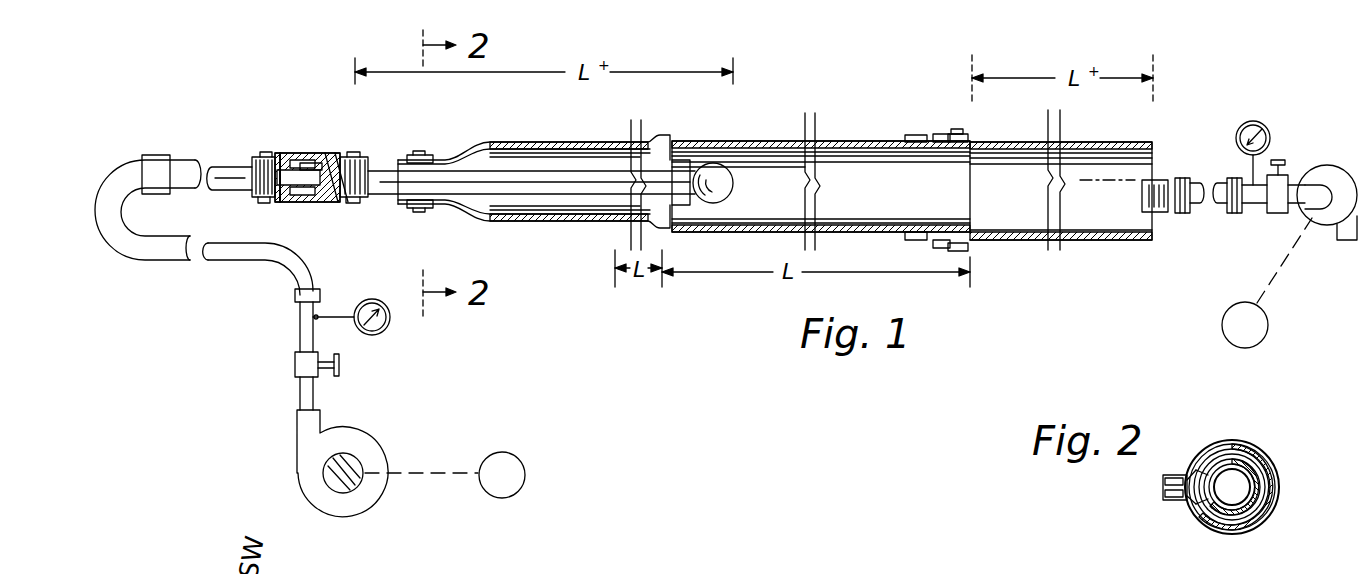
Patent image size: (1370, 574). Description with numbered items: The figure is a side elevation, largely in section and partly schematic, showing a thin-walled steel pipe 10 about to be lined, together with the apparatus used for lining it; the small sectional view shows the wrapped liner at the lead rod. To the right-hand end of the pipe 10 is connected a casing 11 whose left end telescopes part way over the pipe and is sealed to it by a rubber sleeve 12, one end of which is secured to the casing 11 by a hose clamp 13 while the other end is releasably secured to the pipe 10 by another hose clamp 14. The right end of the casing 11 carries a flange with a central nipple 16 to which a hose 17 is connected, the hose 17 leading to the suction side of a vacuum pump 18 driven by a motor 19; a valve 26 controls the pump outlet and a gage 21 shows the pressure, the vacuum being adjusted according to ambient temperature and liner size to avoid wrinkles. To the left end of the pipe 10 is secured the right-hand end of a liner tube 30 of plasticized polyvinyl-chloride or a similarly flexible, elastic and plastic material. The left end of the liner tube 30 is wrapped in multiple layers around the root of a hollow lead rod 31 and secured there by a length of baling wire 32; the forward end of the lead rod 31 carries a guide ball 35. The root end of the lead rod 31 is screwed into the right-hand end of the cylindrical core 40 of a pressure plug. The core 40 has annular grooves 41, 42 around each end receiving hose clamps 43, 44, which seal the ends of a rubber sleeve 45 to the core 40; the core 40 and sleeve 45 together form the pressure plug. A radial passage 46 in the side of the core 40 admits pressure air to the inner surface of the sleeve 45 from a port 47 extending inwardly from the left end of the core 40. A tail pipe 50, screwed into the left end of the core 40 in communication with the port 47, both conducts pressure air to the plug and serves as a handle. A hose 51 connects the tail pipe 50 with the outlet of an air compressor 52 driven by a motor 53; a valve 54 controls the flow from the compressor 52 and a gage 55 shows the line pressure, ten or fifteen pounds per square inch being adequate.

In FIG. 1, the steel pipe 10 is at (766, 141).
In FIG. 1, the casing 11 is at (1000, 142).
In FIG. 1, the rubber sleeve 12 is at (940, 134).
In FIG. 1, the hose clamp 13 is at (957, 134).
In FIG. 1, the hose clamp 14 is at (912, 135).
In FIG. 1, the central nipple 16 is at (1162, 180).
In FIG. 1, the hose 17 is at (1221, 182).
In FIG. 1, the vacuum pump 18 is at (1320, 170).
In FIG. 1, the motor 19 is at (1268, 328).
In FIG. 1, the gage 21 is at (1253, 121).
In FIG. 1, the valve 26 is at (1280, 175).
In FIG. 1, the liner tube 30 is at (515, 142).
In FIG. 2, the liner tube 30 is at (1272, 487).
In FIG. 1, the lead rod 31 is at (558, 153).
In FIG. 1, the baling wire 32 is at (420, 155).
In FIG. 2, the baling wire 32 is at (1206, 443).
In FIG. 1, the ball 35 is at (736, 190).
In FIG. 1, the cylindrical core 40 is at (325, 202).
In FIG. 1, the annular groove 41 is at (262, 203).
In FIG. 1, the annular groove 42 is at (350, 203).
In FIG. 1, the hose clamp 43 is at (266, 152).
In FIG. 1, the hose clamp 44 is at (352, 153).
In FIG. 1, the rubber sleeve 45 is at (290, 153).
In FIG. 1, the radial passage 46 is at (314, 163).
In FIG. 1, the port 47 is at (340, 160).
In FIG. 1, the tail pipe 50 is at (215, 166).
In FIG. 1, the hose 51 is at (185, 263).
In FIG. 1, the air compressor 52 is at (362, 430).
In FIG. 1, the motor 53 is at (494, 453).
In FIG. 1, the valve 54 is at (295, 365).
In FIG. 1, the gage 55 is at (374, 335).